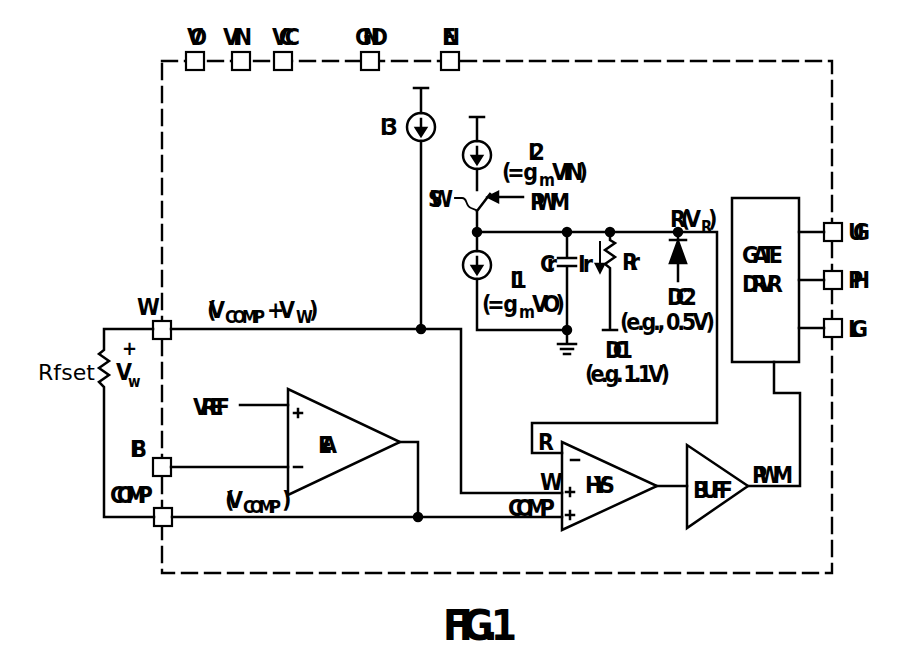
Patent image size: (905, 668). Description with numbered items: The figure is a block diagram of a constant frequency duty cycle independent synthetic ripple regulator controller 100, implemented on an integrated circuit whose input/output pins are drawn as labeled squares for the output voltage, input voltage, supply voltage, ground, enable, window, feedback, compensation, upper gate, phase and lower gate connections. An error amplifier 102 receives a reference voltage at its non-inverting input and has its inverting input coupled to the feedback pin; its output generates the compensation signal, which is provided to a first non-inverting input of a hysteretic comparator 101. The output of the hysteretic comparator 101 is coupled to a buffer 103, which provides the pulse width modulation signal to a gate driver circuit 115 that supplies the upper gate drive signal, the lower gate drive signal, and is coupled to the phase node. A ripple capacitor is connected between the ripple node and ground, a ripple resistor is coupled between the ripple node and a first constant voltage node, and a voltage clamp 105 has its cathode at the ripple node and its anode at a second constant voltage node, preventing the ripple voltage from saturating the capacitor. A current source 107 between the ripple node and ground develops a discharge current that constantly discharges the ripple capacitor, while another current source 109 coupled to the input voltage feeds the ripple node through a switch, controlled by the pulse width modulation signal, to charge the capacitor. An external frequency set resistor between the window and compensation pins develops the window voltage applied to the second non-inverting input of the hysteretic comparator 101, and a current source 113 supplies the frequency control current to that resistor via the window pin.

The synthetic ripple regulator controller 100 is at (232, 118).
The hysteretic comparator 101 is at (634, 475).
The error amplifier 102 is at (347, 416).
The buffer 103 is at (730, 473).
The voltage clamp 105 is at (672, 253).
The current source 107 is at (467, 257).
The current source 109 is at (488, 142).
The current source 113 is at (409, 139).
The gate driver circuit 115 is at (782, 316).